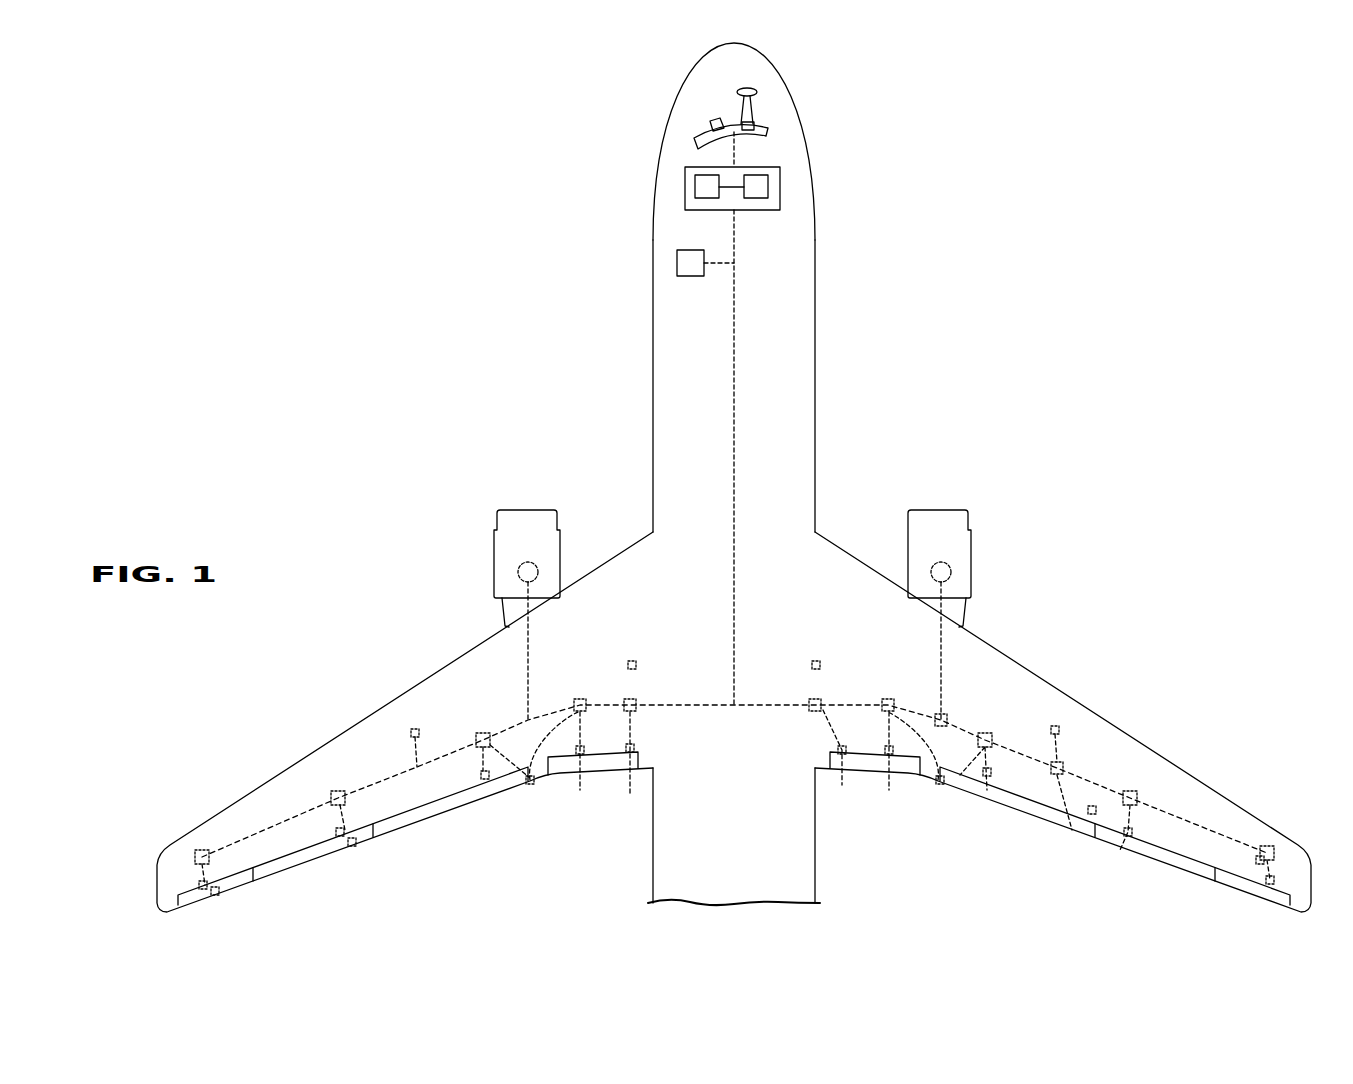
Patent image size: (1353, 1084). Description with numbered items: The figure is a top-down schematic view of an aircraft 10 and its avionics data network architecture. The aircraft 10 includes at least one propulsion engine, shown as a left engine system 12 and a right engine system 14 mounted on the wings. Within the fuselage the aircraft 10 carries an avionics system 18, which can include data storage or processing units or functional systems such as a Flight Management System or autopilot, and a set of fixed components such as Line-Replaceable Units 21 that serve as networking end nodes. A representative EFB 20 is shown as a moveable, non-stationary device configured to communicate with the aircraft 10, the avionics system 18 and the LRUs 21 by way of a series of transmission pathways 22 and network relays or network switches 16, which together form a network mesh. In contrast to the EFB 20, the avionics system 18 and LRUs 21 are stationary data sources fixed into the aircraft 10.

The aircraft 10 is at (543, 77).
The left engine system 12 is at (525, 520).
The right engine system 14 is at (955, 525).
The network switches 16 is at (215, 896).
The avionics system 18 is at (700, 199).
The EFB 20 is at (677, 265).
The Line-Replaceable Units 21 is at (540, 565).
The transmission pathways 22 is at (734, 397).